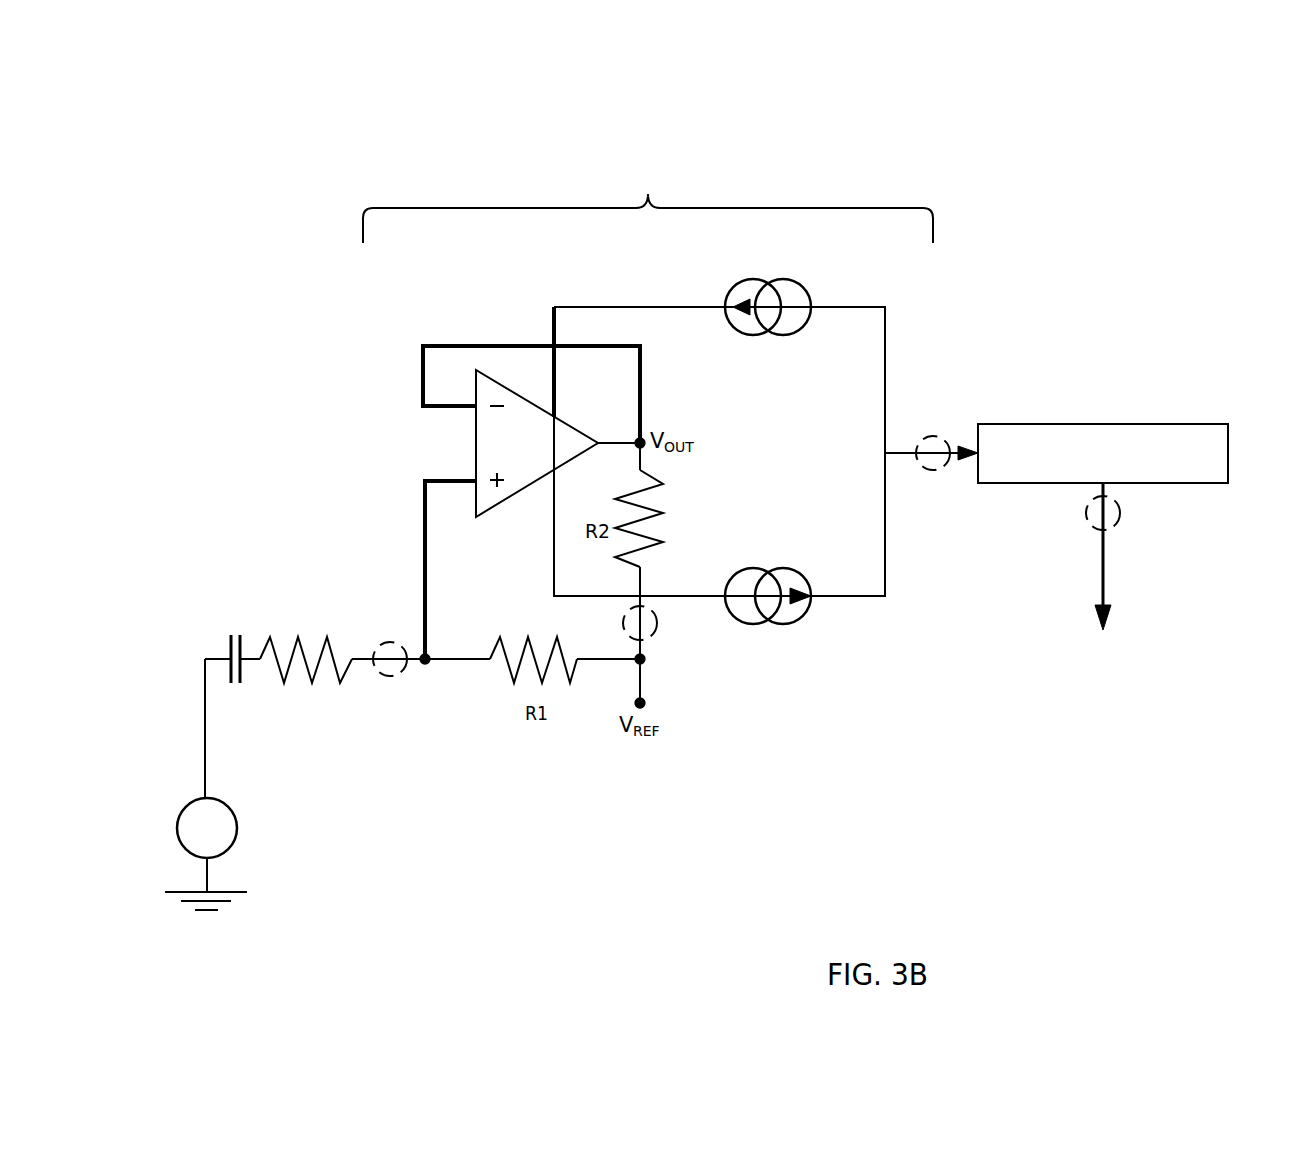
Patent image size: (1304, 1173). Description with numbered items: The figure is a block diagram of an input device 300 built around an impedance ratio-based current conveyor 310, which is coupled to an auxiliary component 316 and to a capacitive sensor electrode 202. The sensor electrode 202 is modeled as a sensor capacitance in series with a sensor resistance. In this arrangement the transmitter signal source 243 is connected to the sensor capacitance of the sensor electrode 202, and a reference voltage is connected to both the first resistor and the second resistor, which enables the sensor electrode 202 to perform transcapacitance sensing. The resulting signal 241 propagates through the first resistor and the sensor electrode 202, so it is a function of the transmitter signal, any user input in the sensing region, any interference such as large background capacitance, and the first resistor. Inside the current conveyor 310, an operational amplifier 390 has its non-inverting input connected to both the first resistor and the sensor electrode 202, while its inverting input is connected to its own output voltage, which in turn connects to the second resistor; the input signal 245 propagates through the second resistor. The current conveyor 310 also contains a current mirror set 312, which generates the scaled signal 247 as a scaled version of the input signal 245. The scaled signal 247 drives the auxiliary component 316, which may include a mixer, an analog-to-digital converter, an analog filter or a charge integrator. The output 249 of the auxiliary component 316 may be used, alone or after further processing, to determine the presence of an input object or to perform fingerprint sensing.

The input device 300 is at (1148, 187).
The impedance ratio-based current conveyor 310 is at (648, 164).
The operational amplifier 390 is at (502, 443).
The capacitive sensor electrode 202 is at (343, 602).
The current mirror set 312 is at (765, 335).
The auxiliary component 316 is at (1118, 478).
The scaled signal 247 is at (932, 436).
The output 249 is at (1118, 502).
The input signal 245 is at (657, 633).
The resulting signal 241 is at (392, 676).
The transmitter signal source 243 is at (237, 830).